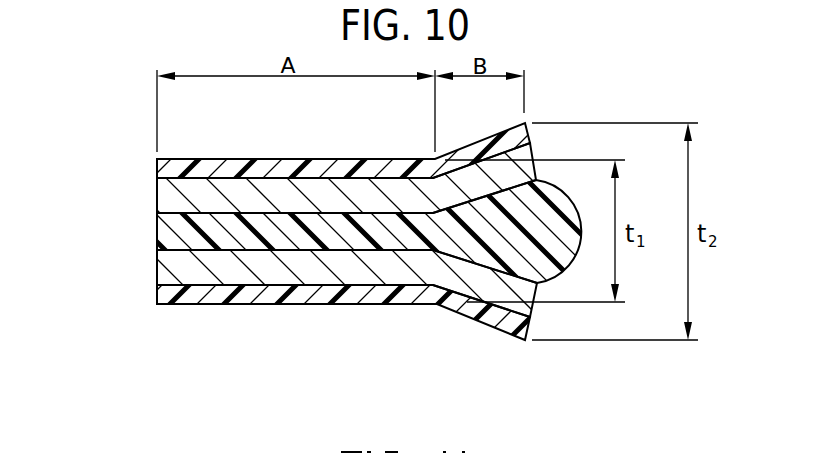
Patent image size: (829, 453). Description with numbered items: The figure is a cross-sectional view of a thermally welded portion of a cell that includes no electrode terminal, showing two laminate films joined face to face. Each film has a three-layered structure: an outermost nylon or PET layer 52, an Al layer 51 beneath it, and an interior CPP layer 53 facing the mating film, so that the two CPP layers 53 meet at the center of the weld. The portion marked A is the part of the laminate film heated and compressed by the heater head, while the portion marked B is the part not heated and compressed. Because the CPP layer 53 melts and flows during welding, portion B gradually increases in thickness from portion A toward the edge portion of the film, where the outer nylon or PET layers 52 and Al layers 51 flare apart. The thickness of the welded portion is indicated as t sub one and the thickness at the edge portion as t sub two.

The Al layer 51 is at (157, 202).
The outermost nylon or PET layer 52 is at (157, 173).
The interior CPP layer 53 is at (157, 236).